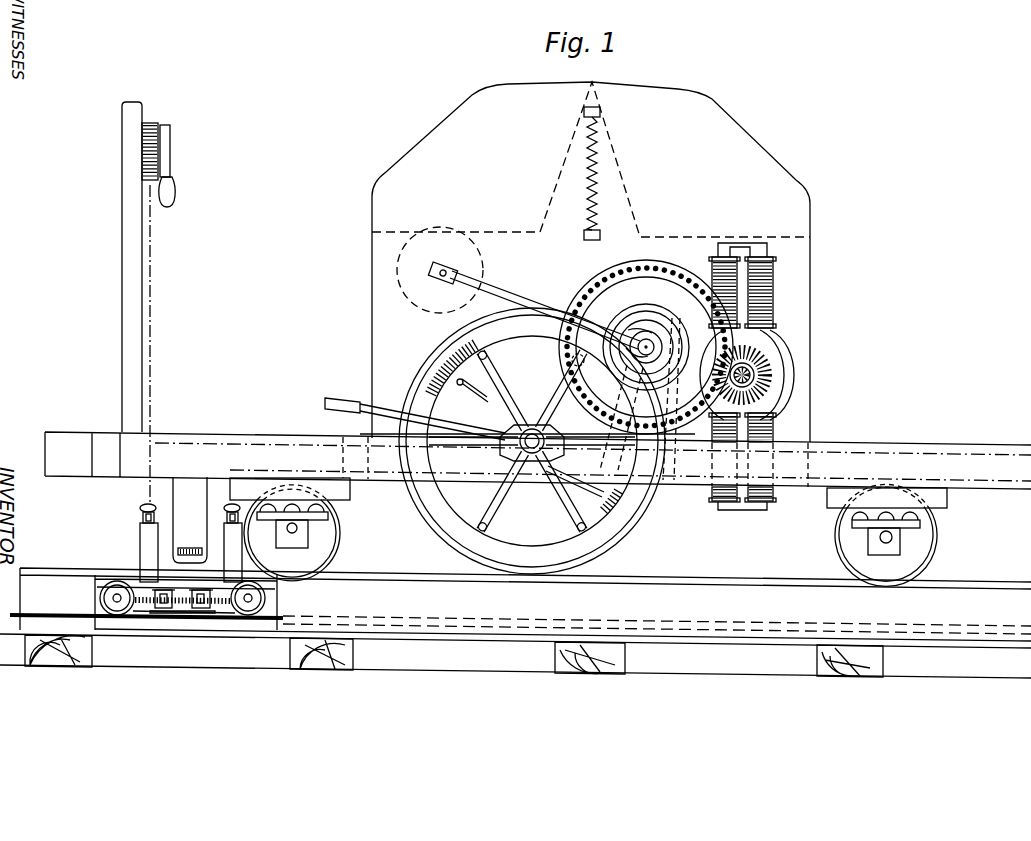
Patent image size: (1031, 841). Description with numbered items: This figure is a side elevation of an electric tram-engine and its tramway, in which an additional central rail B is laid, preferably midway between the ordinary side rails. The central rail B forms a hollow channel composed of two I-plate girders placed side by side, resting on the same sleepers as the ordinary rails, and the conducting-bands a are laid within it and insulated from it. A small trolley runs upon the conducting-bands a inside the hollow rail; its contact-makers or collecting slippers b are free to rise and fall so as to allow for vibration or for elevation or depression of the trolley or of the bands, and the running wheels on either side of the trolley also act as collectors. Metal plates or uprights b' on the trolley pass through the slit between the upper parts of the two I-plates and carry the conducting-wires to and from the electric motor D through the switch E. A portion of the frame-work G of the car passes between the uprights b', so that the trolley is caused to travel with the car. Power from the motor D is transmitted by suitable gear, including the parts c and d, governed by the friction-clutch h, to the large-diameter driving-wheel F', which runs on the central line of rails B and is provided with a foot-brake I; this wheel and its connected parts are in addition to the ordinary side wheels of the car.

The switch E is at (166, 314).
The frame-work of the car G is at (190, 520).
The metal plates b' is at (191, 543).
The contact-makers b is at (182, 622).
The conducting-bands a is at (211, 620).
The central rail B is at (515, 623).
The driving-wheel F' is at (532, 441).
The gear d is at (646, 370).
The friction-clutch h is at (627, 327).
The electric motor D is at (747, 376).
The gear c is at (764, 384).
The foot-brake I is at (415, 409).